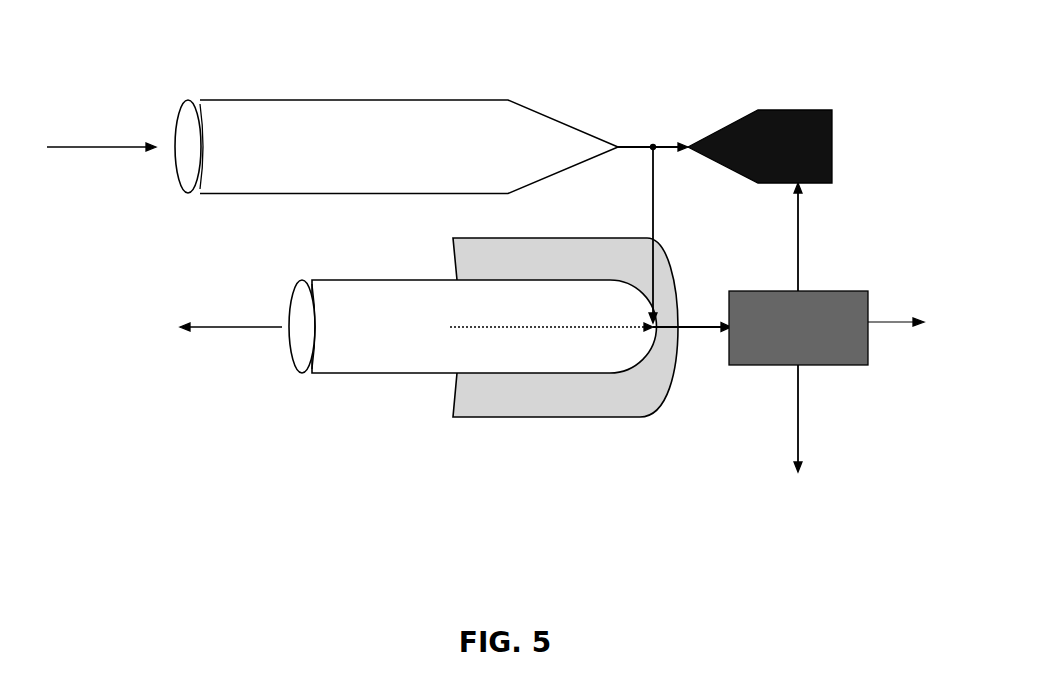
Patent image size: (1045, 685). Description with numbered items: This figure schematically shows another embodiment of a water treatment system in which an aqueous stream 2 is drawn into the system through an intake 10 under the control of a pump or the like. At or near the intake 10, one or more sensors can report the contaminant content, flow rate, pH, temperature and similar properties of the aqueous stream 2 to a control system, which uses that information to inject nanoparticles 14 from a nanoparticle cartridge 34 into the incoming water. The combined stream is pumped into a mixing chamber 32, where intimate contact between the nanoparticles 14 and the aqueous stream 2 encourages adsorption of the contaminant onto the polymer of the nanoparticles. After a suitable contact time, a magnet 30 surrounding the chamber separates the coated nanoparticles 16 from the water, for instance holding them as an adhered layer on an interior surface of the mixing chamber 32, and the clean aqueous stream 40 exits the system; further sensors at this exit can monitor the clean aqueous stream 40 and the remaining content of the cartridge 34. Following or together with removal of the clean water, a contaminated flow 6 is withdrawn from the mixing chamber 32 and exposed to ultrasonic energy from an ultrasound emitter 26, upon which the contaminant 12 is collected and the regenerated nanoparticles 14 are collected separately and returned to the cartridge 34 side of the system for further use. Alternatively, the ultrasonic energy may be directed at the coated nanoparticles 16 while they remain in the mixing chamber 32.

The aqueous stream 2 is at (91, 147).
The contaminated flow 6 is at (688, 322).
The intake 10 is at (265, 100).
The contaminant 12 is at (908, 323).
The nanoparticles 14 is at (672, 142).
The coated nanoparticles 16 is at (456, 388).
The ultrasound emitter 26 is at (818, 291).
The magnet 30 is at (530, 405).
The mixing chamber 32 is at (445, 300).
The nanoparticle cartridge 34 is at (792, 110).
The clean aqueous stream 40 is at (216, 327).